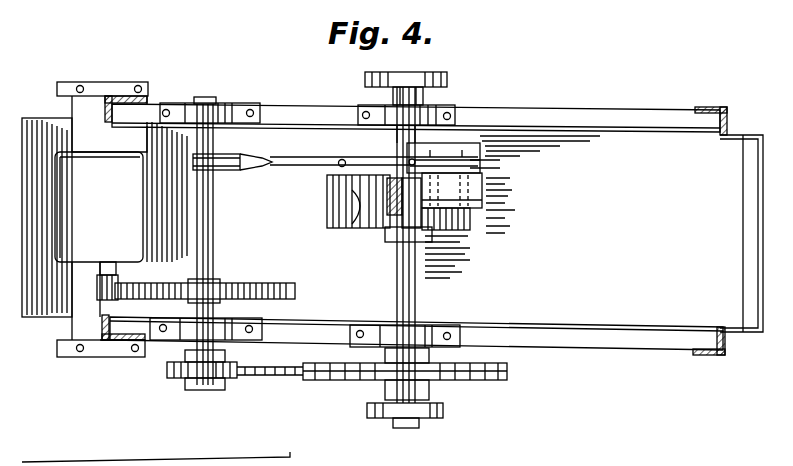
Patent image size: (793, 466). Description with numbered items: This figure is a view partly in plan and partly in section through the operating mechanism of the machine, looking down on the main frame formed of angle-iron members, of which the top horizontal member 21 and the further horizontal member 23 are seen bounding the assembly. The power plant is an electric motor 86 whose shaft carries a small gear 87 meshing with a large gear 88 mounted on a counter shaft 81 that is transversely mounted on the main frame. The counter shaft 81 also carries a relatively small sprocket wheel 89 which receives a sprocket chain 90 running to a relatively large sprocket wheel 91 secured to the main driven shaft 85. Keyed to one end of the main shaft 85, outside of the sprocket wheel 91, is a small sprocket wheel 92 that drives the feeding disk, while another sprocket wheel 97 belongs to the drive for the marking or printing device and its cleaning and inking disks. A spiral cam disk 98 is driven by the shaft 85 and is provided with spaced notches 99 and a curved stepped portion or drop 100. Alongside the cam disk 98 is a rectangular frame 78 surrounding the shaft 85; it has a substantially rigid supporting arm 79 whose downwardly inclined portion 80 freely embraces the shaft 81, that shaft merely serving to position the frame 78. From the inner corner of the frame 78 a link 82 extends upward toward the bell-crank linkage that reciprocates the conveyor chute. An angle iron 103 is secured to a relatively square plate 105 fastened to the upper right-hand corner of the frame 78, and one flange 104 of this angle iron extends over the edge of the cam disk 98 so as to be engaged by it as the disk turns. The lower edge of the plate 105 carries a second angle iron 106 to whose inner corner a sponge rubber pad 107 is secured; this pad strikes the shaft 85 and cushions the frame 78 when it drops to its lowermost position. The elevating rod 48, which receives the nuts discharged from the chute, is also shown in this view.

The top horizontal member 21 is at (562, 112).
The horizontal member 23 is at (748, 330).
The elevating rod 48 is at (393, 218).
The frame 78 is at (455, 170).
The supporting arm 79 is at (278, 166).
The downwardly inclined portion 80 is at (232, 168).
The counter shaft 81 is at (214, 244).
The link 82 is at (345, 170).
The main driven shaft 85 is at (397, 298).
The electric motor 86 is at (99, 213).
The small gear 87 is at (97, 287).
The large gear 88 is at (268, 278).
The small sprocket wheel 89 is at (185, 380).
The sprocket chain 90 is at (272, 372).
The large sprocket wheel 91 is at (474, 380).
The small sprocket wheel 92 is at (388, 420).
The sprocket wheel 97 is at (420, 74).
The spiral cam disk 98 is at (328, 206).
The notches 99 is at (458, 218).
The curved stepped portion 100 is at (360, 230).
The angle iron 103 is at (486, 186).
The flange 104 is at (478, 200).
The square plate 105 is at (490, 166).
The angle iron 106 is at (448, 157).
The sponge rubber pad 107 is at (398, 140).